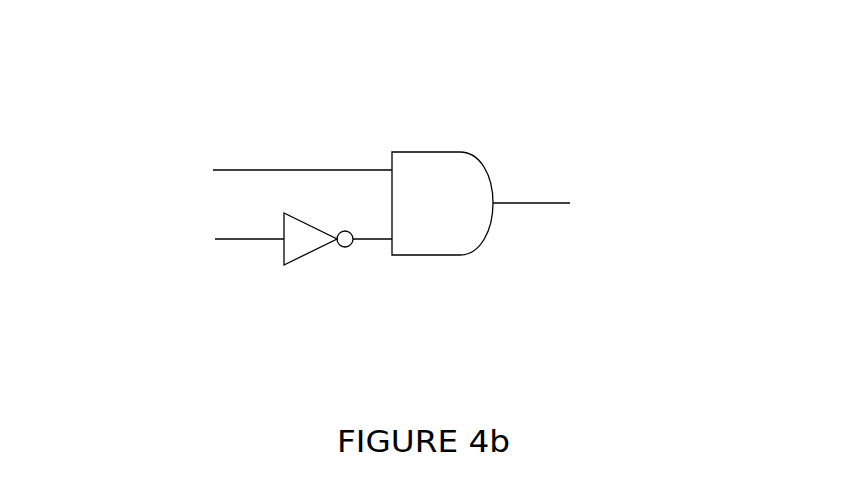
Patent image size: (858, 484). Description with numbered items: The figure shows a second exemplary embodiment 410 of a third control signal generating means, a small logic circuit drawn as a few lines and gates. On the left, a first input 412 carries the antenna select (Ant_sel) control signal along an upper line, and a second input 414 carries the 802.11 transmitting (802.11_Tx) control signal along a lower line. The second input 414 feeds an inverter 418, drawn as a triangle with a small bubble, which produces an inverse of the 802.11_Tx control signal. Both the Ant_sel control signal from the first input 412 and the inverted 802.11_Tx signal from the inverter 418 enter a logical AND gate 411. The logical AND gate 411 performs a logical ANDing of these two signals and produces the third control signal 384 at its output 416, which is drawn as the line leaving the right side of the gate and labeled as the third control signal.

The second exemplary embodiment 410 is at (450, 362).
The first input 412 is at (248, 170).
The second input 414 is at (268, 239).
The output 416 is at (525, 203).
The inverter 418 is at (302, 260).
The logical AND gate 411 is at (455, 255).
The third control signal 384 is at (715, 207).